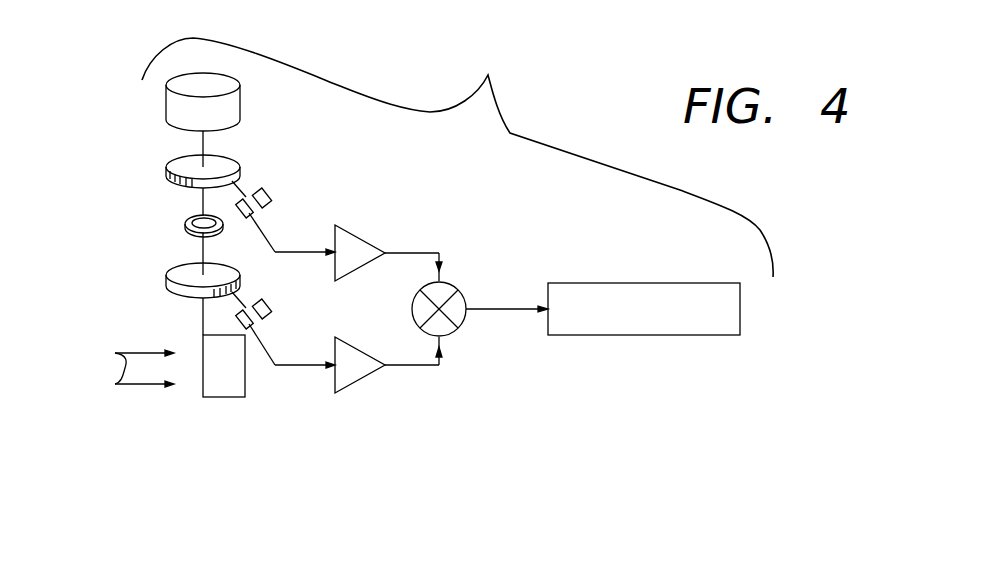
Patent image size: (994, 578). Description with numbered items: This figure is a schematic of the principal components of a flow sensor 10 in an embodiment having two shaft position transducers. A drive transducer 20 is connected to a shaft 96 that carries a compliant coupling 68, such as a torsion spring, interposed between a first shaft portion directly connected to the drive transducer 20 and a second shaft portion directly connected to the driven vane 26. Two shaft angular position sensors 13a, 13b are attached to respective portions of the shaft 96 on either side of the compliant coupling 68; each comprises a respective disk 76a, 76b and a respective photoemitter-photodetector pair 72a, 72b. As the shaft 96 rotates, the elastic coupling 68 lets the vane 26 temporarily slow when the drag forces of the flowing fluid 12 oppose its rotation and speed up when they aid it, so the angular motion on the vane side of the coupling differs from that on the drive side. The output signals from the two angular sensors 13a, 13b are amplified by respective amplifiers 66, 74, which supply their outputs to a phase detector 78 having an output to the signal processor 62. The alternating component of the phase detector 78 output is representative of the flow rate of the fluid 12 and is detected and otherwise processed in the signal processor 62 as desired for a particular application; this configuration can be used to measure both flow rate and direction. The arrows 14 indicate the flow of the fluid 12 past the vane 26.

The sensor 10 is at (457, 155).
The fluid 12 is at (190, 440).
The shaft angular position sensor 13a is at (191, 153).
The shaft angular position sensor 13b is at (130, 271).
The incident light 14 is at (125, 368).
The drive transducer 20 is at (166, 102).
The vane 26 is at (233, 398).
The signal processor 62 is at (673, 336).
The amplifier 66 is at (363, 238).
The compliant coupling 68 is at (185, 224).
The photoemitter-photodetector pair 72a is at (272, 203).
The photoemitter-photodetector pair 72b is at (272, 314).
The amplifier 74 is at (367, 377).
The disk 76a is at (241, 160).
The disk 76b is at (167, 300).
The phase detector 78 is at (460, 328).
The shaft 96 is at (208, 142).